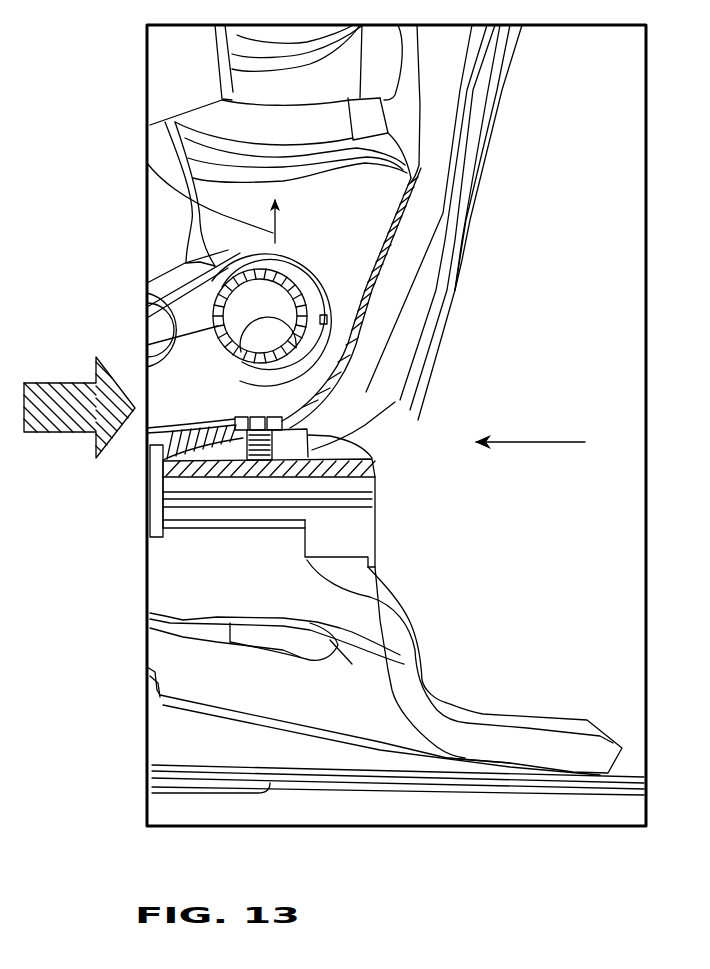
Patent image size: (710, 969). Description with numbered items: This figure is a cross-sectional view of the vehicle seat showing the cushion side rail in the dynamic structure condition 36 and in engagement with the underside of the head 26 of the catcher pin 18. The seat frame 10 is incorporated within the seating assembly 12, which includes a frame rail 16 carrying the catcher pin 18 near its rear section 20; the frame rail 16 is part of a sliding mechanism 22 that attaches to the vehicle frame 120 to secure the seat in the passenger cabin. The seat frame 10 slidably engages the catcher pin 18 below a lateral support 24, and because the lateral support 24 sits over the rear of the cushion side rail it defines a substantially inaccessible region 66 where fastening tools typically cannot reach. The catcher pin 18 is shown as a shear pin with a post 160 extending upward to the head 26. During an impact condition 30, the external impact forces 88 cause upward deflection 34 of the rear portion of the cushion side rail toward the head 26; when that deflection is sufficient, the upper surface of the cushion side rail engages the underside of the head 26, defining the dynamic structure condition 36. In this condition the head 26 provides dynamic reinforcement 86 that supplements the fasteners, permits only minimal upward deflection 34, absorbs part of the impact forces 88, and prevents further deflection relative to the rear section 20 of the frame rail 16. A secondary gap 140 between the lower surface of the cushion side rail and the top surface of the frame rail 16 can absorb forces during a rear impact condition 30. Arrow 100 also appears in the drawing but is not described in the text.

The seat frame 10 is at (128, 205).
The seating assembly 12 is at (488, 206).
The frame rail 16 is at (380, 533).
The catcher pin 18 is at (230, 405).
The rear section 20 is at (376, 478).
The sliding mechanism 22 is at (133, 554).
The lateral support 24 is at (323, 302).
The head 26 is at (236, 421).
The impact condition 30 is at (133, 703).
The upward deflection 34 is at (185, 196).
The dynamic structure condition 36 is at (565, 377).
The substantially inaccessible region 66 is at (230, 381).
The dynamic reinforcement 86 is at (446, 518).
The impact forces 88 is at (70, 413).
The force arrow 100 is at (535, 443).
The vehicle frame 120 is at (528, 783).
The secondary gap 140 is at (352, 442).
The post 160 is at (257, 462).